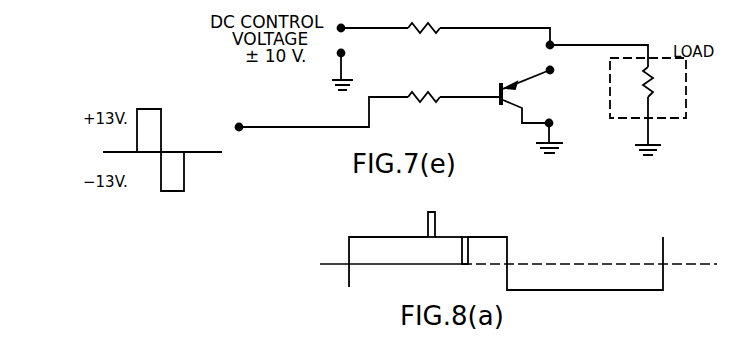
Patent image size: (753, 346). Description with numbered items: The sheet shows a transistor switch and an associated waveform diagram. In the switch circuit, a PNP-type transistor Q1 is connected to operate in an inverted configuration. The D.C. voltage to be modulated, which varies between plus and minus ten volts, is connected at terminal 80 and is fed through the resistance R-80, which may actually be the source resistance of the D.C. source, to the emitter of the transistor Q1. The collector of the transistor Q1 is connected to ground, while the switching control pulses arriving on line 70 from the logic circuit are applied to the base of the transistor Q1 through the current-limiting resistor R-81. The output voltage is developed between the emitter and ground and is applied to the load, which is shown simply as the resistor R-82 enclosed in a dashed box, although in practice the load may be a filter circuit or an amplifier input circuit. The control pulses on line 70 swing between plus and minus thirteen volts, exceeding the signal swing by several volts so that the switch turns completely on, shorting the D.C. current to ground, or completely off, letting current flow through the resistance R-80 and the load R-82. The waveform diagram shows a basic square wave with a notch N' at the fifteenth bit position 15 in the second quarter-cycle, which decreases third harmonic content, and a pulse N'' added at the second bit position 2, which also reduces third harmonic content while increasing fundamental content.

In FIG. 7E, the line 70 is at (319, 127).
In FIG. 7E, the terminal 80 is at (341, 26).
In FIG. 7E, the resistance R-80 is at (409, 10).
In FIG. 7E, the current-limiting resistor R-81 is at (405, 108).
In FIG. 7E, the resistor R-82 is at (653, 88).
In FIG. 7E, the PNP-type transistor Q1 is at (498, 108).
In FIG. 8A, the pulse N'' is at (441, 217).
In FIG. 8A, the notch N' is at (472, 240).
In FIG. 8A, the second bit position 2 is at (431, 261).
In FIG. 8A, the 15th bit position 15 is at (466, 261).